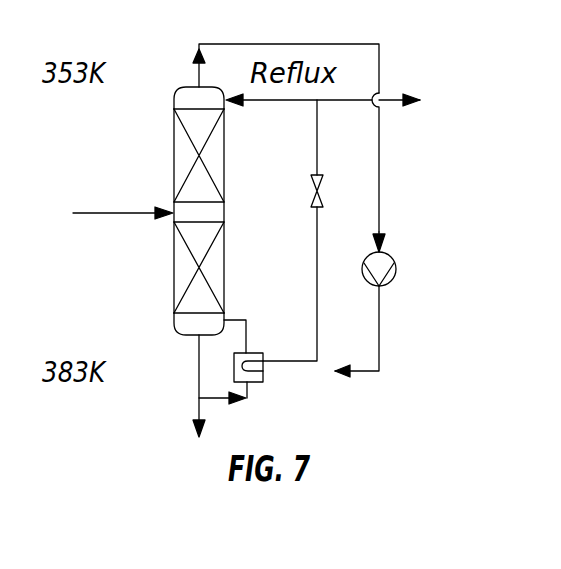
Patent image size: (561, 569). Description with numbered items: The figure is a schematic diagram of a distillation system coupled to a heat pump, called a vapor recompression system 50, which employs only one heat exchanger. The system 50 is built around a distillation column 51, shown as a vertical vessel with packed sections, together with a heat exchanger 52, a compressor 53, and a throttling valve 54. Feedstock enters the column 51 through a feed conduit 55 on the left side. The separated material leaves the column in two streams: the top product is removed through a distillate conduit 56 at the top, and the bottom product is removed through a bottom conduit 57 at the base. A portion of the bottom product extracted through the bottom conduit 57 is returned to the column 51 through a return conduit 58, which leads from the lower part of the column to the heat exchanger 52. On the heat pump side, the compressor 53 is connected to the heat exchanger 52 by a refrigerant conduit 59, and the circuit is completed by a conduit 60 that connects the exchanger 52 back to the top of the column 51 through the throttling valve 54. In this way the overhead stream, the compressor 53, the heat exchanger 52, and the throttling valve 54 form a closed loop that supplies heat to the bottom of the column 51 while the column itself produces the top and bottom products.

The vapor recompression system 50 is at (152, 166).
The distillation column 51 is at (173, 247).
The heat exchanger 52 is at (250, 383).
The compressor 53 is at (396, 270).
The throttling valve 54 is at (312, 181).
The feed conduit 55 is at (95, 213).
The distillate conduit 56 is at (247, 43).
The bottom conduit 57 is at (192, 413).
The return conduit 58 is at (225, 313).
The refrigerant conduit 59 is at (379, 336).
The conduit 60 is at (313, 242).